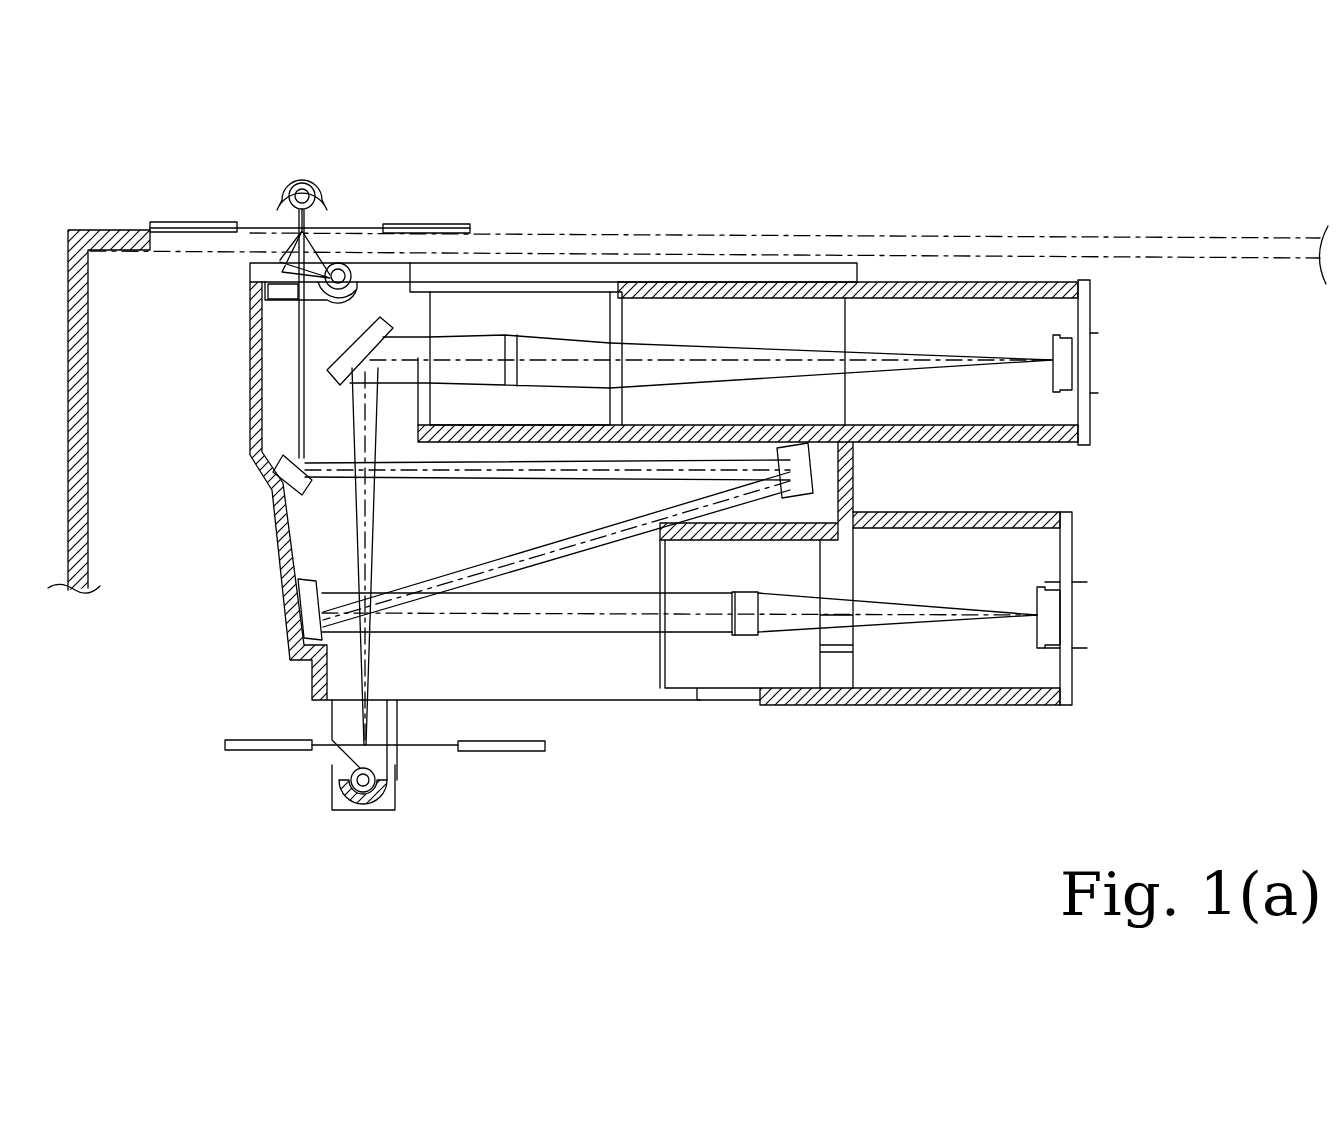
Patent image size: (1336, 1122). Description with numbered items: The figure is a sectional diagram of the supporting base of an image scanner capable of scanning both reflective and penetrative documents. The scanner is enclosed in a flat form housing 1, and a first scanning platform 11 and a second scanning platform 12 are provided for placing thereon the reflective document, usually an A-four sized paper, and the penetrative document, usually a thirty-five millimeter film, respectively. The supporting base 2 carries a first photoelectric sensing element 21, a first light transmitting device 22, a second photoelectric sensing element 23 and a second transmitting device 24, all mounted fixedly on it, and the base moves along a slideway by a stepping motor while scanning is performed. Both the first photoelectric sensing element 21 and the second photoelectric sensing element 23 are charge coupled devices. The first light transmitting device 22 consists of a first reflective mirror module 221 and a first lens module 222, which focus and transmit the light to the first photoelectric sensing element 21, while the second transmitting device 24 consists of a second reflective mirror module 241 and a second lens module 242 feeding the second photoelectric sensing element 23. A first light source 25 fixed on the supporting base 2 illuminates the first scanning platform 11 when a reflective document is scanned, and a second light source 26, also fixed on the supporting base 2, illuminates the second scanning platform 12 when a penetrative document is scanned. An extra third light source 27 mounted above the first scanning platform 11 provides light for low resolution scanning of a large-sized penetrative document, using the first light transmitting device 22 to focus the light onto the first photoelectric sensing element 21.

The housing 1 is at (78, 308).
The supporting base 2 is at (280, 560).
The first scanning platform 11 is at (757, 245).
The second scanning platform 12 is at (500, 750).
The first photoelectric sensing element 21 is at (1065, 630).
The first light transmitting device 22 is at (458, 540).
The second photoelectric sensing element 23 is at (1065, 375).
The second transmitting device 24 is at (498, 128).
The first light source 25 is at (338, 268).
The second light source 26 is at (363, 810).
The third light source 27 is at (287, 188).
The first reflective mirror module 221 is at (302, 488).
The first lens module 222 is at (747, 618).
The second reflective mirror module 241 is at (368, 333).
The second lens module 242 is at (510, 355).